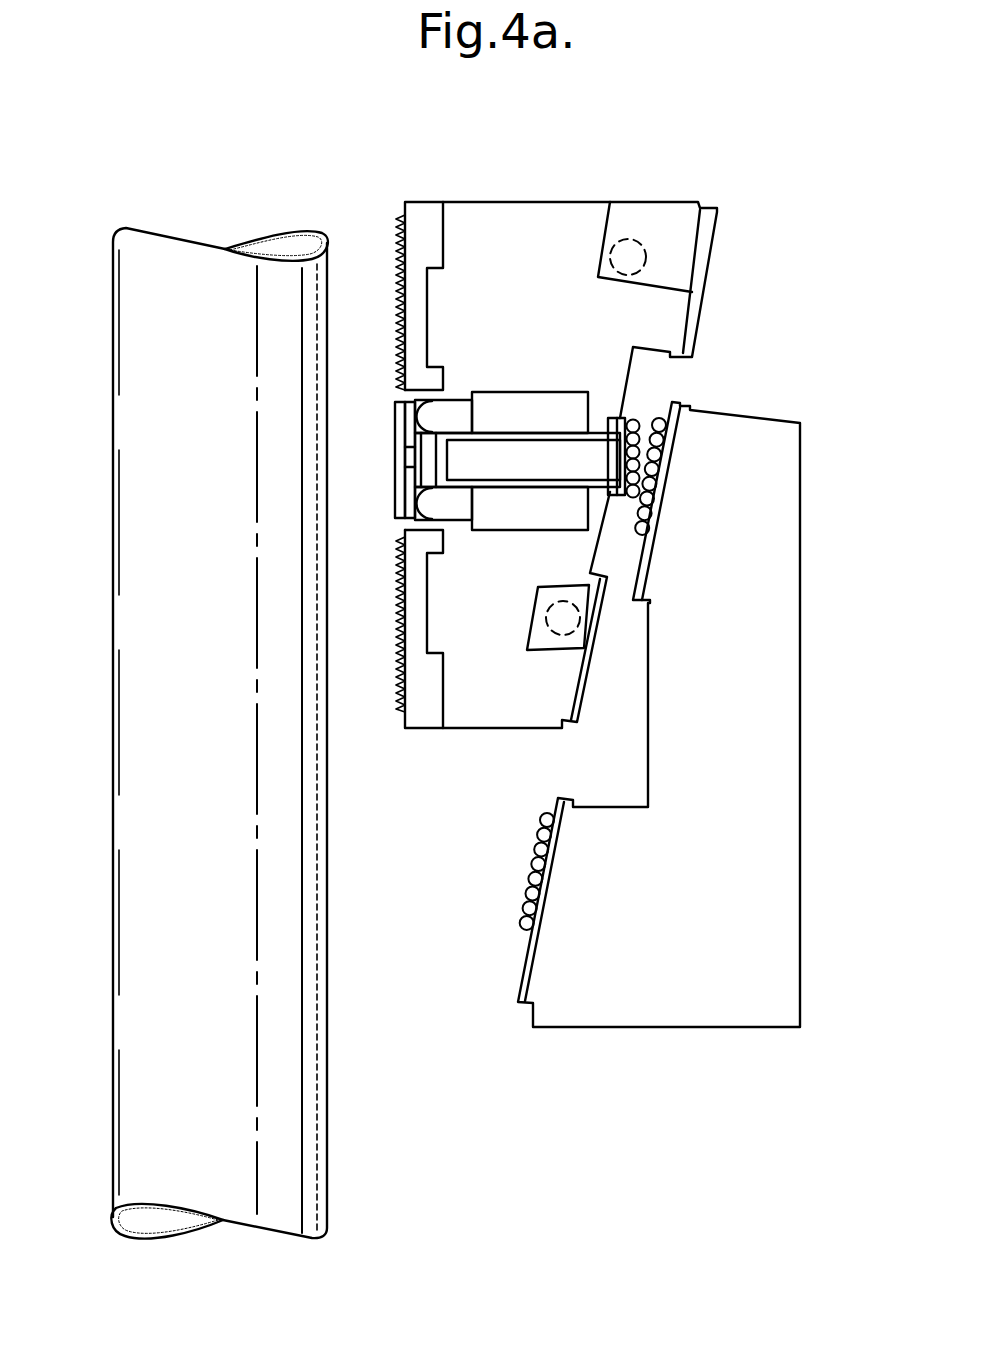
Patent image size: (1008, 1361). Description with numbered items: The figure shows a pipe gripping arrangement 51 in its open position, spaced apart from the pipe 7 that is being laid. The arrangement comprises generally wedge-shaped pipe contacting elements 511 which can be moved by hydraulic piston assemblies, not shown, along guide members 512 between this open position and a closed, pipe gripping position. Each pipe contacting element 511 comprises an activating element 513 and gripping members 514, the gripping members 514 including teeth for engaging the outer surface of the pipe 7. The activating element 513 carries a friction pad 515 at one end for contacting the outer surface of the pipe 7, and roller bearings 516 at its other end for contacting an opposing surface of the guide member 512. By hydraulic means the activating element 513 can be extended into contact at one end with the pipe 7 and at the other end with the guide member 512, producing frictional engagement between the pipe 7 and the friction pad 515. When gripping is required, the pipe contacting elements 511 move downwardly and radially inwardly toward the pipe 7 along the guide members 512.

The pipe 7 is at (280, 1213).
The pipe gripping arrangement 51 is at (803, 225).
The pipe contacting element 511 is at (540, 218).
The guide member 512 is at (722, 1007).
The activating element 513 is at (532, 458).
The gripping member 514 is at (422, 208).
The friction pad 515 is at (405, 452).
The roller bearings 516 is at (662, 478).